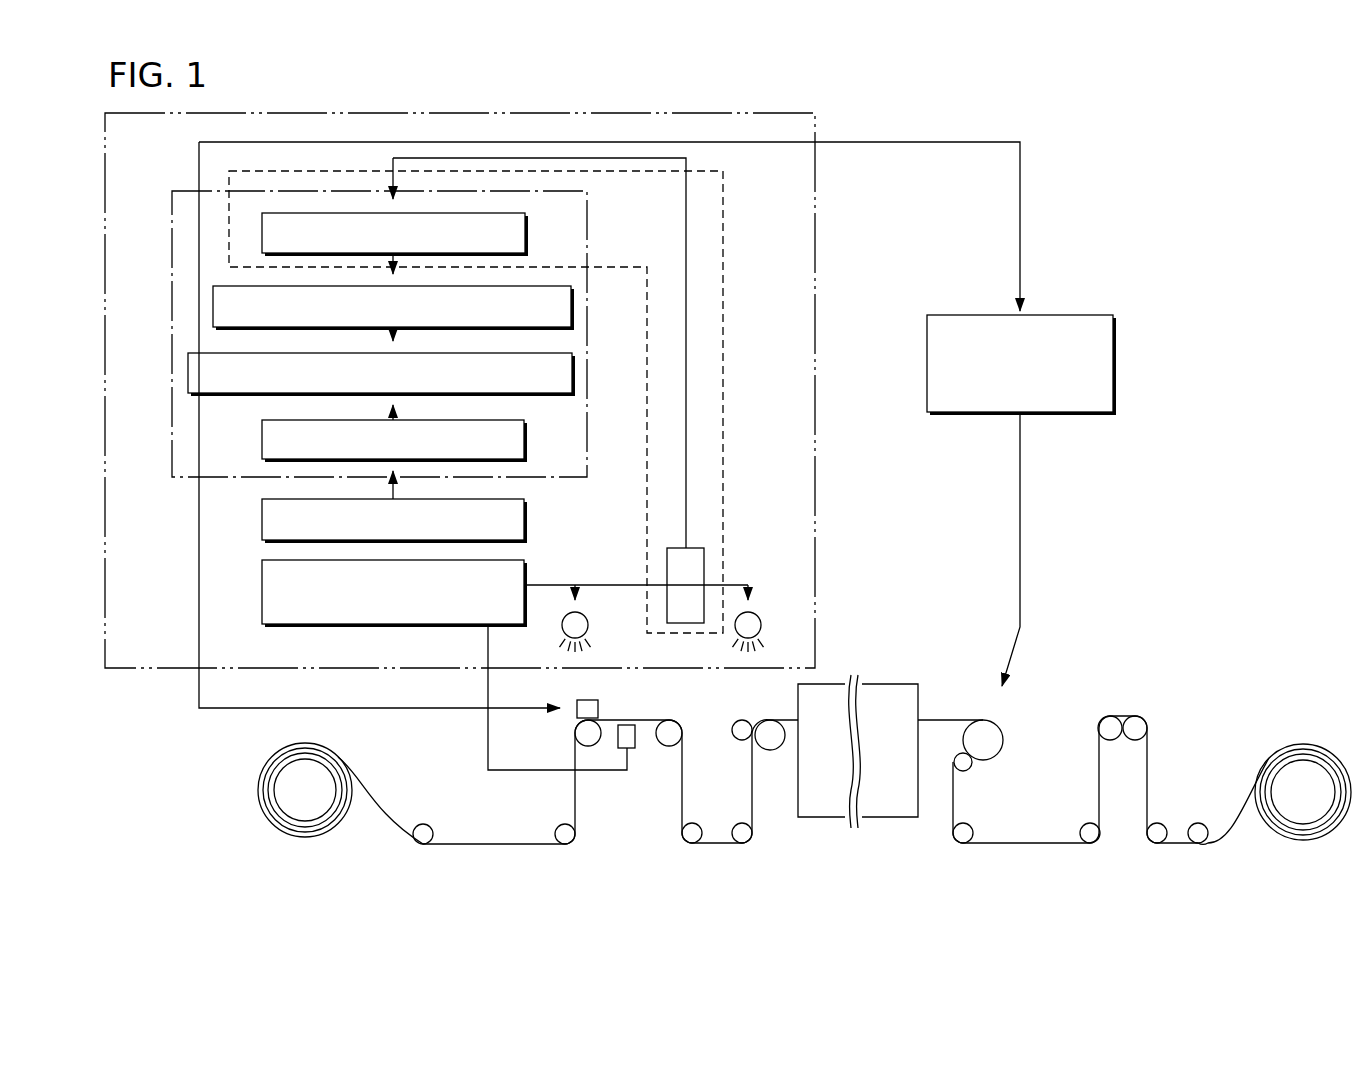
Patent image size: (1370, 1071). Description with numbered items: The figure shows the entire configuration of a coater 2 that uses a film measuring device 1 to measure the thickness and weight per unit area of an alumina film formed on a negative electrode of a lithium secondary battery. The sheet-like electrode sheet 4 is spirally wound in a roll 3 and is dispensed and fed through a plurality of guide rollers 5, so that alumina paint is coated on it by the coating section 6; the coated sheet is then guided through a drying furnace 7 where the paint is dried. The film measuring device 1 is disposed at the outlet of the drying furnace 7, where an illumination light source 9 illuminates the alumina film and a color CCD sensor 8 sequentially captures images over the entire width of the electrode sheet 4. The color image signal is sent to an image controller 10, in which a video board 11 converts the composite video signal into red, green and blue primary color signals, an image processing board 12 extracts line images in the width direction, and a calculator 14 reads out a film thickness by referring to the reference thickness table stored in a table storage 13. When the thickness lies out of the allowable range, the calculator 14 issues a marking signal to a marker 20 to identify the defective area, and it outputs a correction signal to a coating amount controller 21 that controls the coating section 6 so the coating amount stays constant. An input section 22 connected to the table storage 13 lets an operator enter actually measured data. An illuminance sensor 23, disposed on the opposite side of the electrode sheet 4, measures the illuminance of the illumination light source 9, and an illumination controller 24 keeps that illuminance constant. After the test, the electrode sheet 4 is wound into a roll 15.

The film measuring device 1 is at (541, 112).
The coater 2 is at (1162, 221).
The roll 3 is at (1266, 827).
The electrode sheet 4 is at (1148, 745).
The guide rollers 5 is at (1195, 842).
The coating section 6 is at (1003, 730).
The drying furnace 7 is at (880, 818).
The color CCD sensor 8 is at (702, 548).
The illumination light source 9 is at (588, 620).
The image controller 10 is at (181, 191).
The video board 11 is at (525, 228).
The image processing board 12 is at (571, 305).
The table storage 13 is at (524, 440).
The calculator 14 is at (572, 372).
The roll 15 is at (325, 832).
The marker 20 is at (598, 705).
The coating amount controller 21 is at (1113, 348).
The input section 22 is at (524, 516).
The illuminance sensor 23 is at (627, 748).
The illumination controller 24 is at (524, 568).